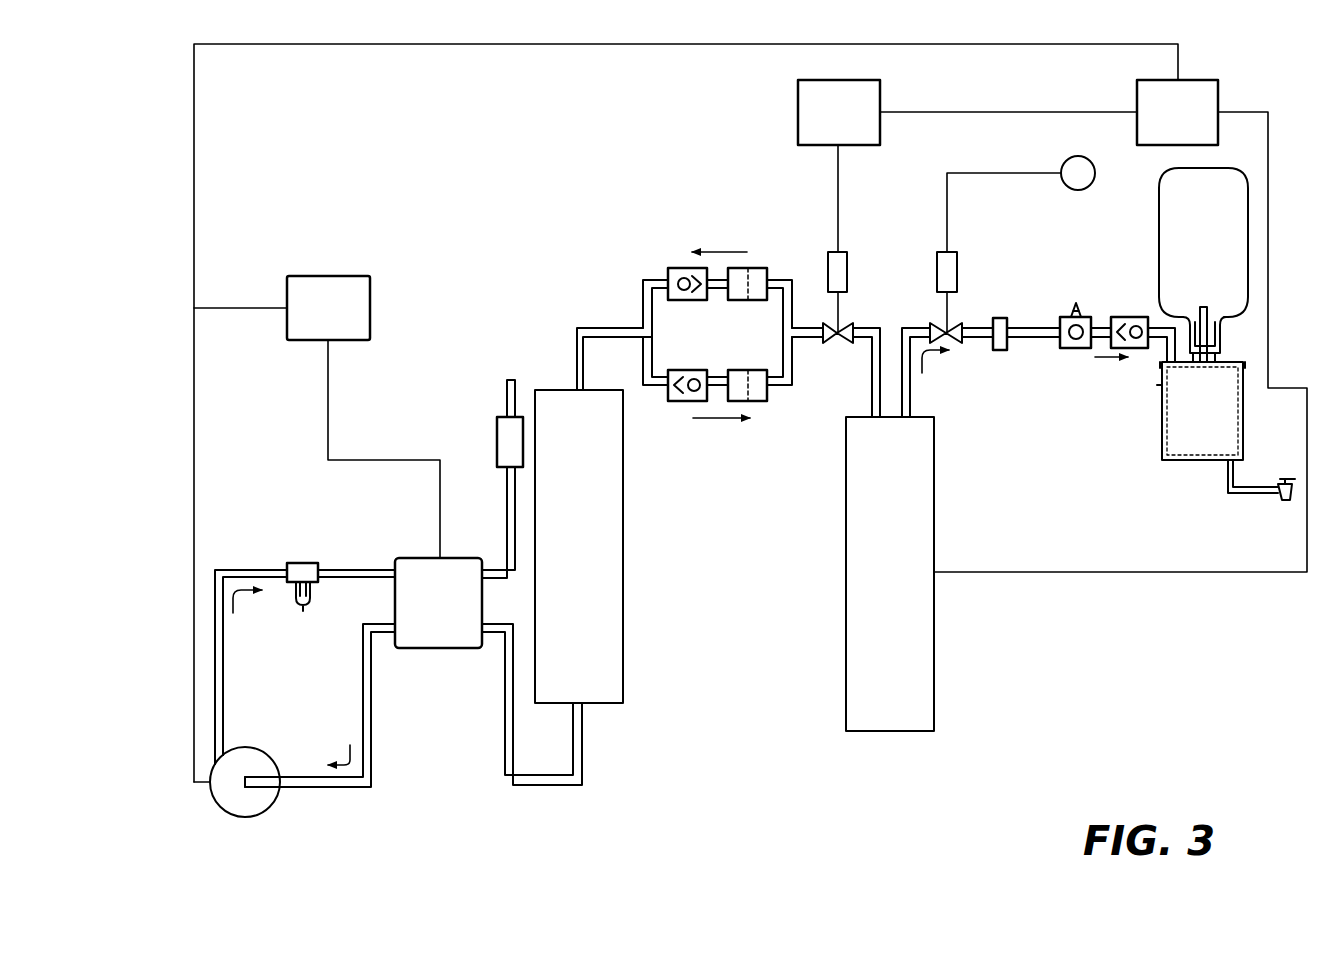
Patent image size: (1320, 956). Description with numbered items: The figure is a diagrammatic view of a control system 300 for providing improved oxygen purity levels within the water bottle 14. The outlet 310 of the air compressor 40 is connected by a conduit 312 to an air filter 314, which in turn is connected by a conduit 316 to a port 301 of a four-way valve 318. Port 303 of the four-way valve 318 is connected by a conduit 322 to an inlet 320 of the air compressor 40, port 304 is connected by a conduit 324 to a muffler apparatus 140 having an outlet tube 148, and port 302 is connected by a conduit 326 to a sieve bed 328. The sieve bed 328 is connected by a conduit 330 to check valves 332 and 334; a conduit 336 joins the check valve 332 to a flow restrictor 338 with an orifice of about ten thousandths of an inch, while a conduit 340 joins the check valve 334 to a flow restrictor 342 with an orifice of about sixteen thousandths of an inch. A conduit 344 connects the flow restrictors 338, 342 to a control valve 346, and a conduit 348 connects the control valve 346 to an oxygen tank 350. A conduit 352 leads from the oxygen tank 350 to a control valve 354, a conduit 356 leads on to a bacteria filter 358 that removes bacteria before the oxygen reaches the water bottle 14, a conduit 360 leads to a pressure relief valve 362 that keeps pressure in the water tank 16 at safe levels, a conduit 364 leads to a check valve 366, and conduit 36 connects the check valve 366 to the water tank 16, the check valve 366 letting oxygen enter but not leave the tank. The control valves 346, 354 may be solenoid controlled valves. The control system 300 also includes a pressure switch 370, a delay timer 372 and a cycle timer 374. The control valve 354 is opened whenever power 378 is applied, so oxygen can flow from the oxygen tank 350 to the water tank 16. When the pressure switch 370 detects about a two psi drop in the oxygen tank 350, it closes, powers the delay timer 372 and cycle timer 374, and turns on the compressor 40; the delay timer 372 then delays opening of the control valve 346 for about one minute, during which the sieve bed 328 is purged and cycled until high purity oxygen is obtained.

The water bottle 14 is at (1240, 270).
The water tank 16 is at (1170, 433).
The conduit 36 is at (1168, 342).
The air compressor 40 is at (225, 800).
The muffler apparatus 140 is at (484, 443).
The outlet tube 148 is at (508, 395).
The control system 300 is at (466, 190).
The port 301 is at (395, 573).
The port 302 is at (487, 630).
The port 303 is at (395, 630).
The port 304 is at (492, 572).
The outlet 310 is at (218, 727).
The conduit 312 is at (230, 573).
The air filter 314 is at (295, 572).
The conduit 316 is at (340, 573).
The four-way valve 318 is at (420, 573).
The inlet 320 is at (250, 782).
The conduit 322 is at (367, 760).
The conduit 324 is at (510, 550).
The conduit 326 is at (540, 780).
The sieve bed 328 is at (595, 690).
The conduit 330 is at (610, 328).
The check valve 332 is at (675, 270).
The check valve 334 is at (675, 401).
The conduit 336 is at (716, 281).
The flow restrictor 338 is at (762, 270).
The conduit 340 is at (716, 383).
The flow restrictor 342 is at (757, 401).
The conduit 344 is at (788, 365).
The control valve 346 is at (841, 330).
The conduit 348 is at (866, 332).
The oxygen tank 350 is at (907, 692).
The conduit 352 is at (905, 330).
The control valve 354 is at (948, 328).
The conduit 356 is at (978, 340).
The bacteria filter 358 is at (1000, 320).
The conduit 360 is at (1030, 338).
The pressure relief valve 362 is at (1066, 320).
The conduit 364 is at (1098, 338).
The check valve 366 is at (1120, 320).
The pressure switch 370 is at (1137, 86).
The delay timer 372 is at (877, 86).
The cycle timer 374 is at (362, 288).
The power 378 is at (1066, 165).